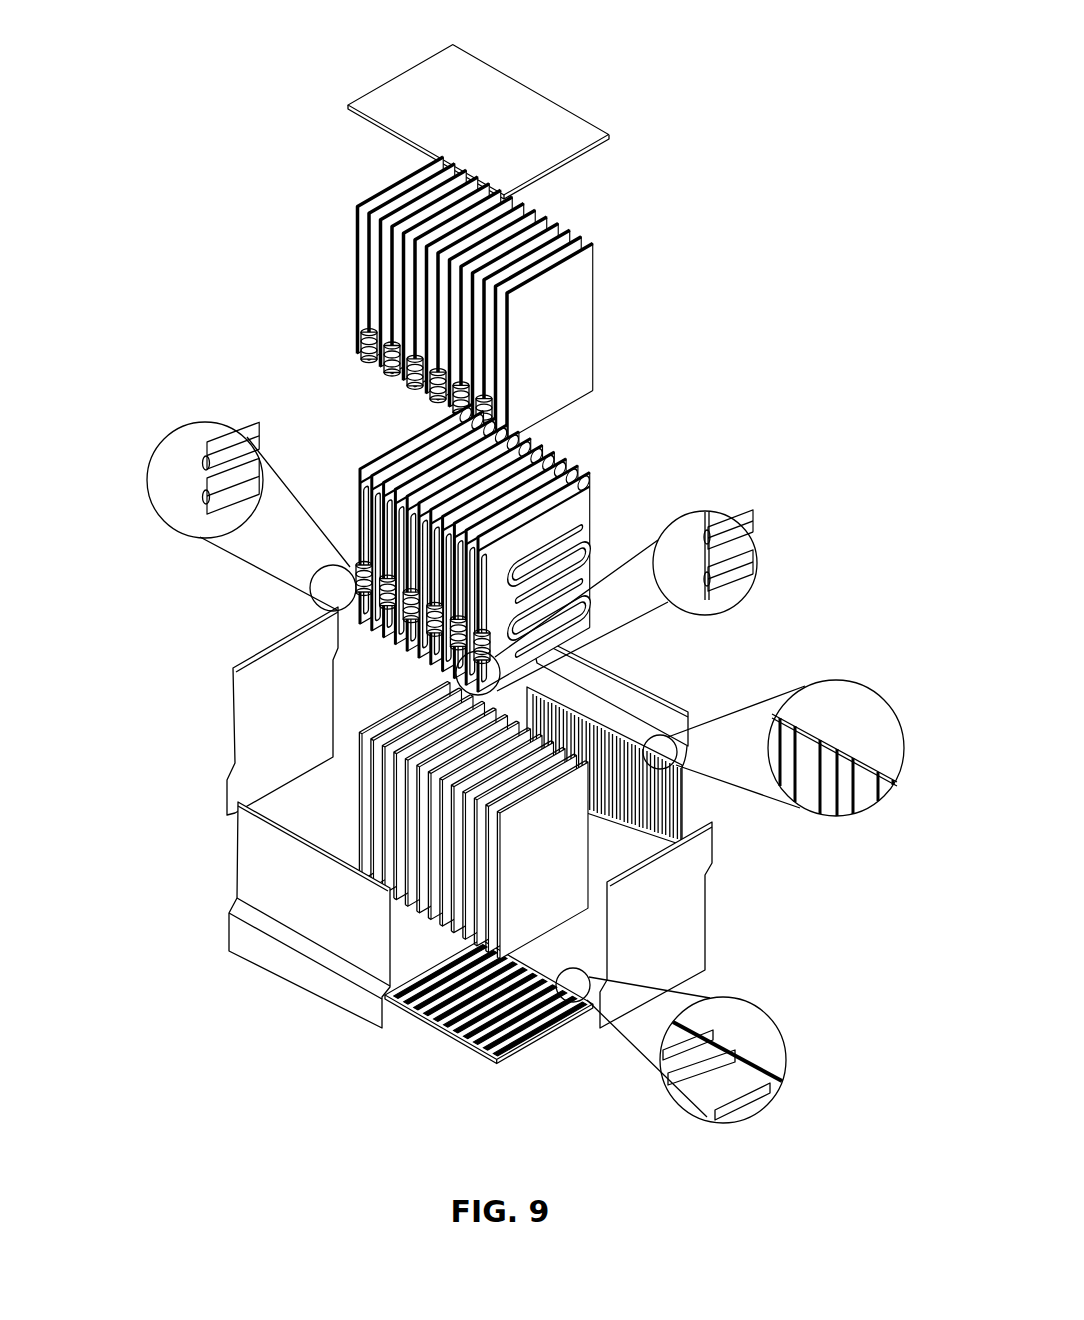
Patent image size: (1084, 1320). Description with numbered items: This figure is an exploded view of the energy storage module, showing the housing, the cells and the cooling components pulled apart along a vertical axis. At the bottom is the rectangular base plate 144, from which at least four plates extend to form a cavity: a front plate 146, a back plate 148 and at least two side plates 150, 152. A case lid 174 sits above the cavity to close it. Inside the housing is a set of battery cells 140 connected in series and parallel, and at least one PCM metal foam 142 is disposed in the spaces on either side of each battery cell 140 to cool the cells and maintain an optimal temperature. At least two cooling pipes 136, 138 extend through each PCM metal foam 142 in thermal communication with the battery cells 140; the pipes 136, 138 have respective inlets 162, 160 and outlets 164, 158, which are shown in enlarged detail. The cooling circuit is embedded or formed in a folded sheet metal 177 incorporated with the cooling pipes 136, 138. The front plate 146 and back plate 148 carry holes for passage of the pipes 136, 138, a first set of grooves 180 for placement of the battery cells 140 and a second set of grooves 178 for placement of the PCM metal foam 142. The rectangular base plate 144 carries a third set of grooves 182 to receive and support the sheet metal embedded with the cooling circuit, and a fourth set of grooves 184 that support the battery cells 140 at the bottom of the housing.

The cooling pipe 136 is at (257, 473).
The cooling pipe 138 is at (237, 449).
The battery cells 140 is at (578, 808).
The PCM metal foam 142 is at (570, 317).
The rectangular base plate 144 is at (443, 1025).
The front plate 146 is at (298, 978).
The back plate 148 is at (648, 712).
The side plate 150 is at (683, 917).
The side plate 152 is at (253, 740).
The outlet 158 is at (708, 590).
The inlet 160 is at (205, 497).
The inlet 162 is at (705, 530).
The outlet 164 is at (203, 463).
The case lid 174 is at (491, 91).
The folded sheet metal 177 is at (578, 478).
The second set of grooves 178 is at (837, 750).
The first set of grooves 180 is at (810, 738).
The third set of grooves 182 is at (718, 1062).
The fourth set of grooves 184 is at (712, 1098).